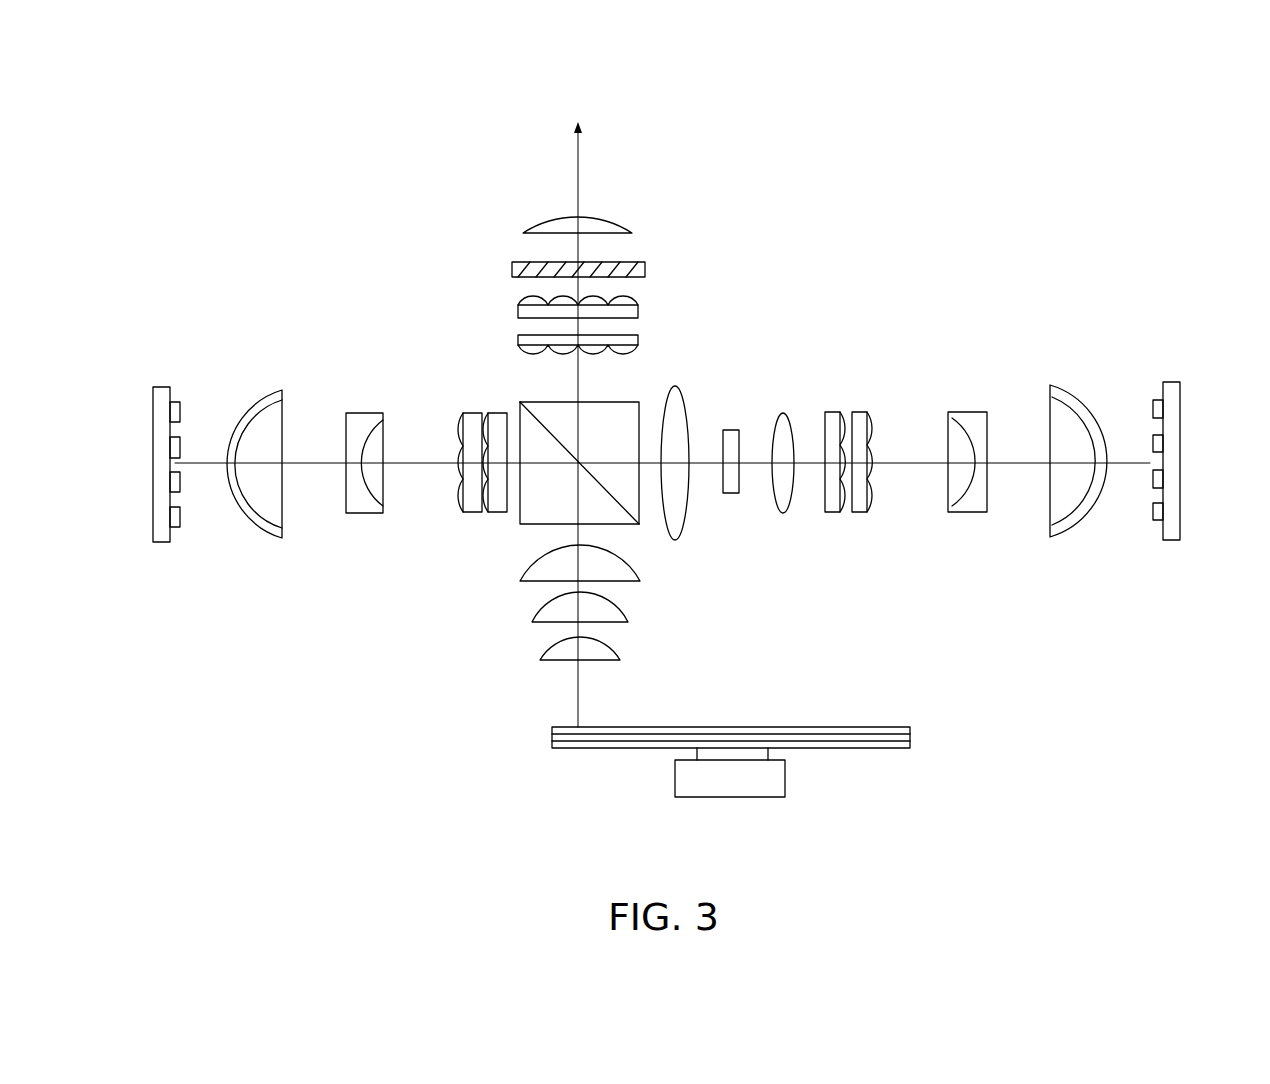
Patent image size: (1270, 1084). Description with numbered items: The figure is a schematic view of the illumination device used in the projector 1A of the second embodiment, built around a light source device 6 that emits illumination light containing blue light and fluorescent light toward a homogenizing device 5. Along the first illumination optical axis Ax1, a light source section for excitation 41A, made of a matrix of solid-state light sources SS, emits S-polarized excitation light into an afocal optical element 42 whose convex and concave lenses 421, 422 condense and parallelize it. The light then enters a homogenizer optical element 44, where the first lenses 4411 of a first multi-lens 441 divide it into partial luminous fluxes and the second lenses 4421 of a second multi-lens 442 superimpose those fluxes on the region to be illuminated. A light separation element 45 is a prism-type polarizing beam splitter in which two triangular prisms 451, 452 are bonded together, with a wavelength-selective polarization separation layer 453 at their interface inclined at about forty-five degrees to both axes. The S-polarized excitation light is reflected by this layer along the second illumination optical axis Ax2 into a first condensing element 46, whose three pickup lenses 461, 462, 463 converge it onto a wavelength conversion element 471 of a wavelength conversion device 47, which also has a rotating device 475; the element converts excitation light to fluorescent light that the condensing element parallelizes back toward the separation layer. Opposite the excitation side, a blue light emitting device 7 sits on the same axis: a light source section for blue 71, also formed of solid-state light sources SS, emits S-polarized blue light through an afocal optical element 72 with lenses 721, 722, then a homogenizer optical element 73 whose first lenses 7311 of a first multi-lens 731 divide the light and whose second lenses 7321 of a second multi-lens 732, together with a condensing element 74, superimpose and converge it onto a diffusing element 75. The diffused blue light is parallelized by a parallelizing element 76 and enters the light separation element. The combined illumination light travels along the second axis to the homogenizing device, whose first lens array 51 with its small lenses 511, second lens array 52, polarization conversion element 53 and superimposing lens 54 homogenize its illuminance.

The projector 1A is at (1082, 158).
The light source device 6 is at (214, 242).
The blue light emitting device 7 is at (1132, 303).
The first illumination optical axis Ax1 is at (202, 466).
The second illumination optical axis Ax2 is at (582, 150).
The light source section for excitation 41A is at (162, 386).
The solid-state light sources SS is at (170, 447).
The afocal optical element 42 is at (358, 320).
The lens 421 is at (262, 389).
The lens 422 is at (362, 411).
The homogenizer optical element 44 is at (495, 588).
The first multi-lens 441 is at (441, 485).
The second multi-lens 442 is at (484, 472).
The first lenses 4411 is at (462, 421).
The second lenses 4421 is at (491, 411).
The light separation element 45 is at (604, 464).
The prism 451 is at (540, 520).
The prism 452 is at (648, 391).
The polarization separation layer 453 is at (636, 517).
The homogenizing device 5 is at (726, 195).
The first lens array 51 is at (622, 353).
The small lenses 511 is at (622, 356).
The second lens array 52 is at (640, 311).
The polarization conversion element 53 is at (646, 270).
The superimposing lens 54 is at (634, 232).
The first condensing element 46 is at (494, 624).
The pickup lens 461 is at (640, 582).
The pickup lens 462 is at (628, 618).
The pickup lens 463 is at (620, 658).
The wavelength conversion device 47 is at (885, 849).
The wavelength conversion element 471 is at (870, 750).
The rotating device 475 is at (787, 777).
The parallelizing element 76 is at (688, 522).
The diffusing element 75 is at (731, 495).
The condensing element 74 is at (782, 514).
The homogenizer optical element 73 is at (897, 571).
The first multi-lens 731 is at (887, 465).
The second multi-lens 732 is at (836, 455).
The first lenses 7311 is at (872, 418).
The second lenses 7321 is at (843, 411).
The afocal optical element 72 is at (1083, 310).
The lens 721 is at (1065, 384).
The lens 722 is at (962, 411).
The light source section for blue 71 is at (1172, 542).